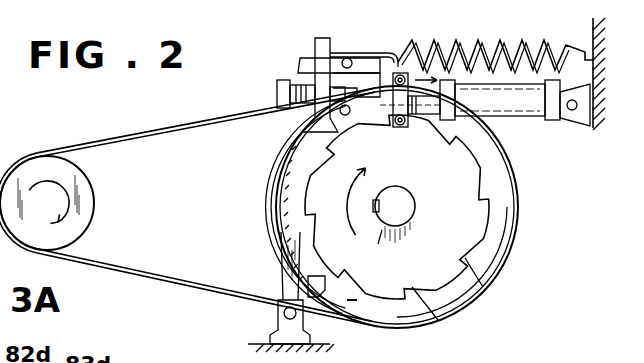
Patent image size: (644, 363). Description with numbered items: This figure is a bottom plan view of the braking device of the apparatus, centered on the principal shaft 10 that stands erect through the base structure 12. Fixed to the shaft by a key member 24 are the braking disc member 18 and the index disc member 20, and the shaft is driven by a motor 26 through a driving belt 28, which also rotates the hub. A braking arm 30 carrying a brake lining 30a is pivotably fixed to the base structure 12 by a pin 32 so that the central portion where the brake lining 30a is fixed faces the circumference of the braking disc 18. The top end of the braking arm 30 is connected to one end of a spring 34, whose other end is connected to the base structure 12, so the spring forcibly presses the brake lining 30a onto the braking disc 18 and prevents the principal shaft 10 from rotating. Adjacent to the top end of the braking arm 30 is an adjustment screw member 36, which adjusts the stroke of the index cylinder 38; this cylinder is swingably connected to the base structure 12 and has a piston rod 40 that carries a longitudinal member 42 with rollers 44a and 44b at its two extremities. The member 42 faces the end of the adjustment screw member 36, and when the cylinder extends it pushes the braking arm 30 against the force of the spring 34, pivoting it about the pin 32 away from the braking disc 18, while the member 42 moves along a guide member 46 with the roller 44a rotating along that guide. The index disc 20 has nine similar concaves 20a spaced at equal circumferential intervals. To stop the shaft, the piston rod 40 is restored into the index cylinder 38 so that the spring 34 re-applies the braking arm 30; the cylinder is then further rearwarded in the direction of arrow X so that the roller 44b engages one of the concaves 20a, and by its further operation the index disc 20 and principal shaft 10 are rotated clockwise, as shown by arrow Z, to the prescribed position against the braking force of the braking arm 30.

The principal shaft 10 is at (424, 200).
The base structure 12 is at (262, 340).
The braking disc member 18 is at (364, 300).
The index disc member 20 is at (420, 318).
The concaves 20a is at (483, 280).
The key member 24 is at (378, 244).
The motor 26 is at (83, 222).
The driving belt 28 is at (187, 206).
The braking arm 30 is at (279, 200).
The brake lining 30a is at (290, 226).
The pin 32 is at (283, 290).
The spring 34 is at (482, 40).
The adjustment screw member 36 is at (279, 90).
The index cylinder 38 is at (527, 120).
The piston rod 40 is at (420, 130).
The longitudinal member 42 is at (405, 126).
The roller 44a is at (396, 62).
The roller 44b is at (392, 128).
The guide member 46 is at (302, 58).
The arrow X is at (430, 76).
The arrow Z is at (354, 213).